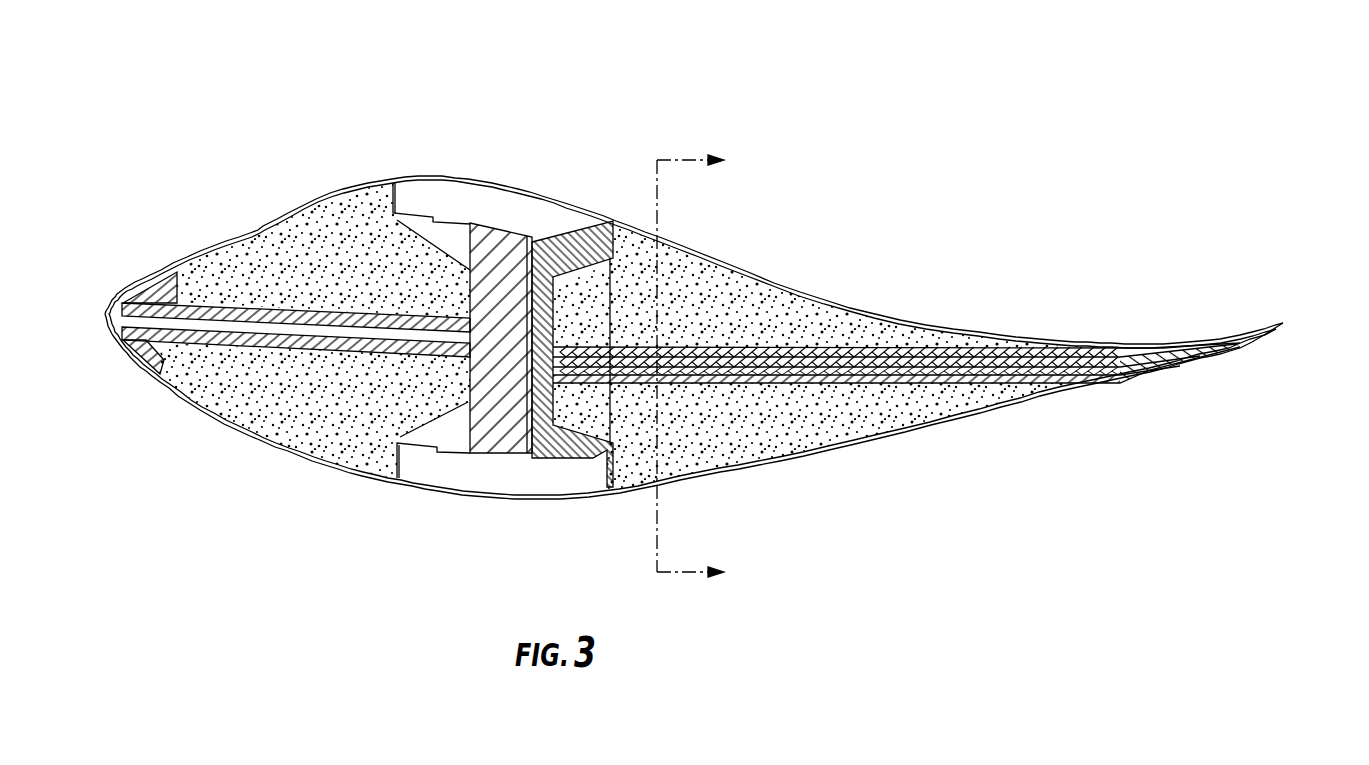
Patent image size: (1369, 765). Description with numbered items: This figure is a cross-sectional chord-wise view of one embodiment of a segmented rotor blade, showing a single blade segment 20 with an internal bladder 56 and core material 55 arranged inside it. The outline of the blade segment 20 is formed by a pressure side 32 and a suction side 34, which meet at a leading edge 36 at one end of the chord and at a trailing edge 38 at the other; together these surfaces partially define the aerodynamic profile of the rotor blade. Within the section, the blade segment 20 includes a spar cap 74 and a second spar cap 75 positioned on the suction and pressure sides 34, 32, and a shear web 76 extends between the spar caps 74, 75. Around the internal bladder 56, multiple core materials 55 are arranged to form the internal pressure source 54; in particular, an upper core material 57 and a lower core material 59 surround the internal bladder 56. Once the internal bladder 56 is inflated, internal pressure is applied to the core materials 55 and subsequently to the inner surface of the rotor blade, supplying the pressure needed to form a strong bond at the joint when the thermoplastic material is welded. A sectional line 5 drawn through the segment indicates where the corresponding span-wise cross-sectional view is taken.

The blade segment 20 is at (122, 118).
The pressure side 32 is at (320, 464).
The suction side 34 is at (332, 188).
The leading edge 36 is at (104, 308).
The trailing edge 38 is at (1284, 323).
The internal pressure source 54 is at (265, 205).
The core material 55 is at (764, 238).
The internal bladder 56 is at (166, 228).
The upper core material 57 is at (885, 327).
The lower core material 59 is at (865, 423).
The spar cap 74 is at (515, 207).
The spar cap 75 is at (583, 480).
The shear web 76 is at (503, 420).
The sectional line 5- 5 is at (700, 368).